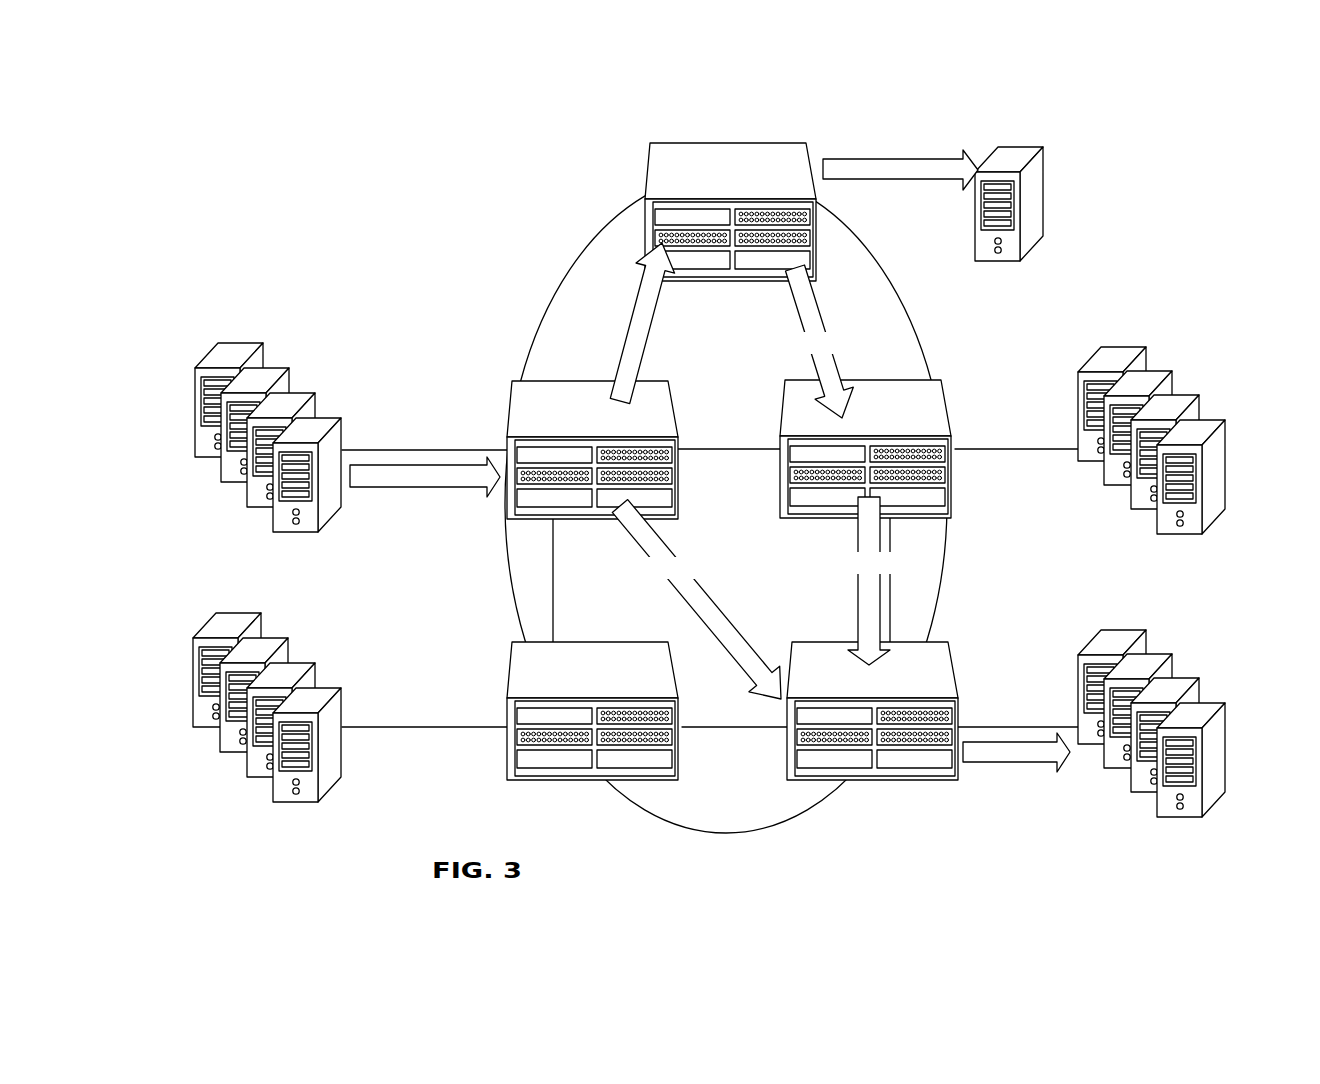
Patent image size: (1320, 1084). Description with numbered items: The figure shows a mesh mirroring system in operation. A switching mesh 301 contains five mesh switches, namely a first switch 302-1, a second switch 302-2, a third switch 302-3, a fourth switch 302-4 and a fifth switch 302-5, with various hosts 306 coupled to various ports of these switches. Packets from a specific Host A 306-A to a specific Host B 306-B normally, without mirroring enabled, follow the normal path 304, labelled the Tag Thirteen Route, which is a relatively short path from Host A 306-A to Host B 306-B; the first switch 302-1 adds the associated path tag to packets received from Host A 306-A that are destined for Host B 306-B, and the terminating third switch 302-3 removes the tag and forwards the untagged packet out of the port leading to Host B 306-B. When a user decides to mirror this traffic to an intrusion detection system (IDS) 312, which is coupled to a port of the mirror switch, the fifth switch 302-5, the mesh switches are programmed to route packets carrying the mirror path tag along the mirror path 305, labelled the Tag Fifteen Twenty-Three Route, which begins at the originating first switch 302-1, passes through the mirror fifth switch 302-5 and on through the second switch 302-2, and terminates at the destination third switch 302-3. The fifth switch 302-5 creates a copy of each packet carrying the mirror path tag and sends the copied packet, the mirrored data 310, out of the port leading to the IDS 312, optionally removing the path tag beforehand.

The switching mesh 301 is at (813, 808).
The switch 1 302-1 is at (555, 431).
The switch 2 302-2 is at (899, 426).
The switch 3 302-3 is at (908, 690).
The switch 4 302-4 is at (555, 699).
The switch 5 302-5 is at (730, 186).
The normal path (Tag 13 Route) 304 is at (768, 699).
The mirror path (Tag 1523 Route) 305 is at (622, 350).
The hosts 306 is at (709, 574).
The Host A 306-A is at (310, 385).
The Host B 306-B is at (1117, 791).
The mirrored data 310 is at (897, 158).
The intrusion detection system (IDS) 312 is at (1077, 204).